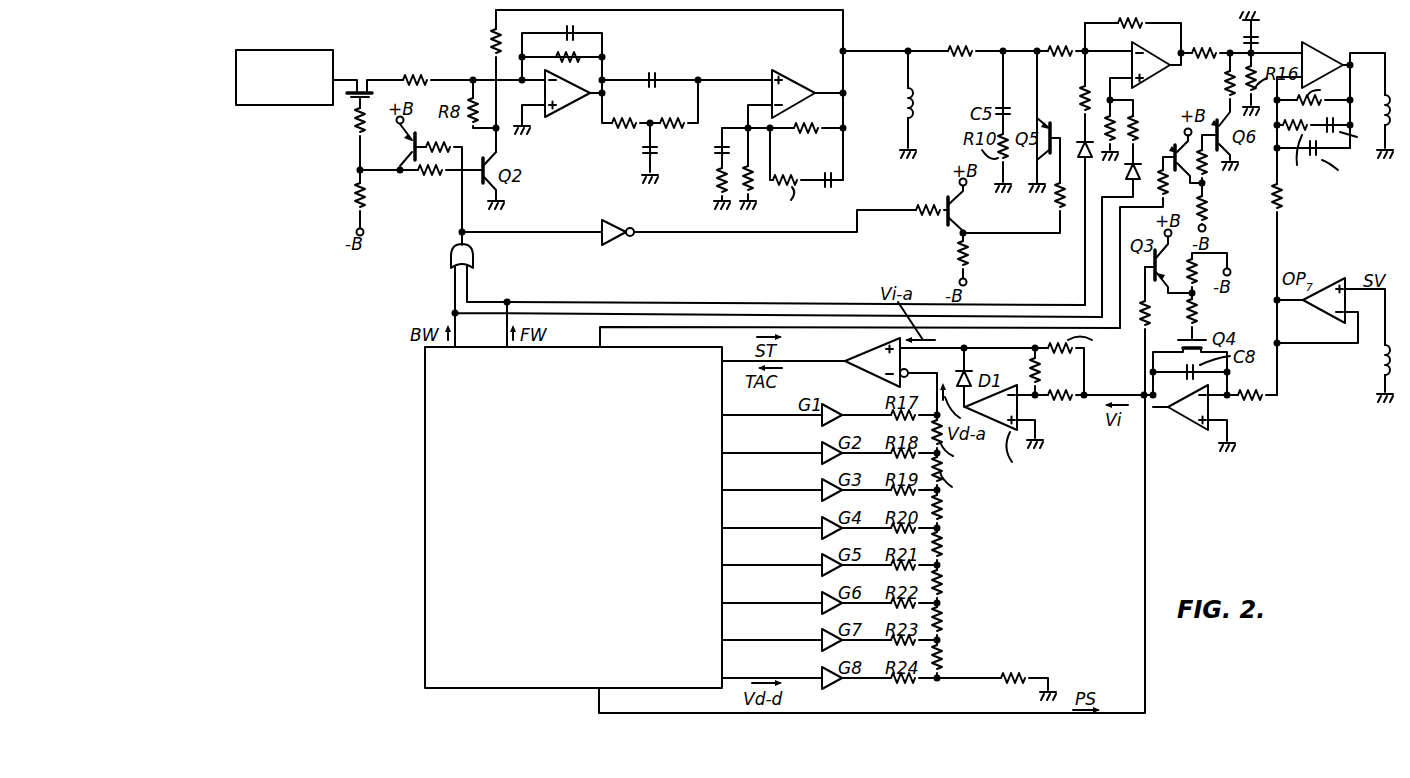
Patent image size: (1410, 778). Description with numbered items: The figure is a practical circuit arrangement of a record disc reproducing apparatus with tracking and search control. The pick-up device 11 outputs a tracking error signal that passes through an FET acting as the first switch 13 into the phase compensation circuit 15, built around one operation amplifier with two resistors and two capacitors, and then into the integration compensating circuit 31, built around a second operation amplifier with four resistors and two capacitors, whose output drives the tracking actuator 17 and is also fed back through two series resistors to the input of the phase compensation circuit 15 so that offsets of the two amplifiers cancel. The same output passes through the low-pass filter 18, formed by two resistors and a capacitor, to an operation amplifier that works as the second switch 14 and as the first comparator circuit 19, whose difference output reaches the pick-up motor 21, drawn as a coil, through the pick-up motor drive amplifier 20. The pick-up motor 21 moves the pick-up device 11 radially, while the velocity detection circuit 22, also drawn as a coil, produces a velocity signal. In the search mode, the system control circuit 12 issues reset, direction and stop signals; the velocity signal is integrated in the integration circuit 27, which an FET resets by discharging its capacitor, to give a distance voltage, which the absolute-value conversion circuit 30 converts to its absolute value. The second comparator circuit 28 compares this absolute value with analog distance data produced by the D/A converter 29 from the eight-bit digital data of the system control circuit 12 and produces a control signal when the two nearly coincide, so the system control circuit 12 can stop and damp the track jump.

The pick-up device 11 is at (262, 105).
The system control circuit 12 is at (425, 422).
The first switch 13 is at (372, 70).
The second switch 14 is at (1106, 38).
The phase compensation circuit 15 is at (527, 25).
The tracking actuator 17 is at (916, 104).
The low-pass filter 18 is at (938, 70).
The first comparator circuit 19 is at (1358, 179).
The pick-up motor drive amplifier 20 is at (1340, 50).
The pick-up motor 21 is at (1380, 117).
The velocity detection circuit 22 is at (1380, 355).
The integration circuit 27 is at (1238, 412).
The second comparator circuit 28 is at (862, 346).
The D/A converter 29 is at (1044, 551).
The absolute-value conversion circuit 30 is at (1048, 427).
The integration compensating circuit 31 is at (797, 45).